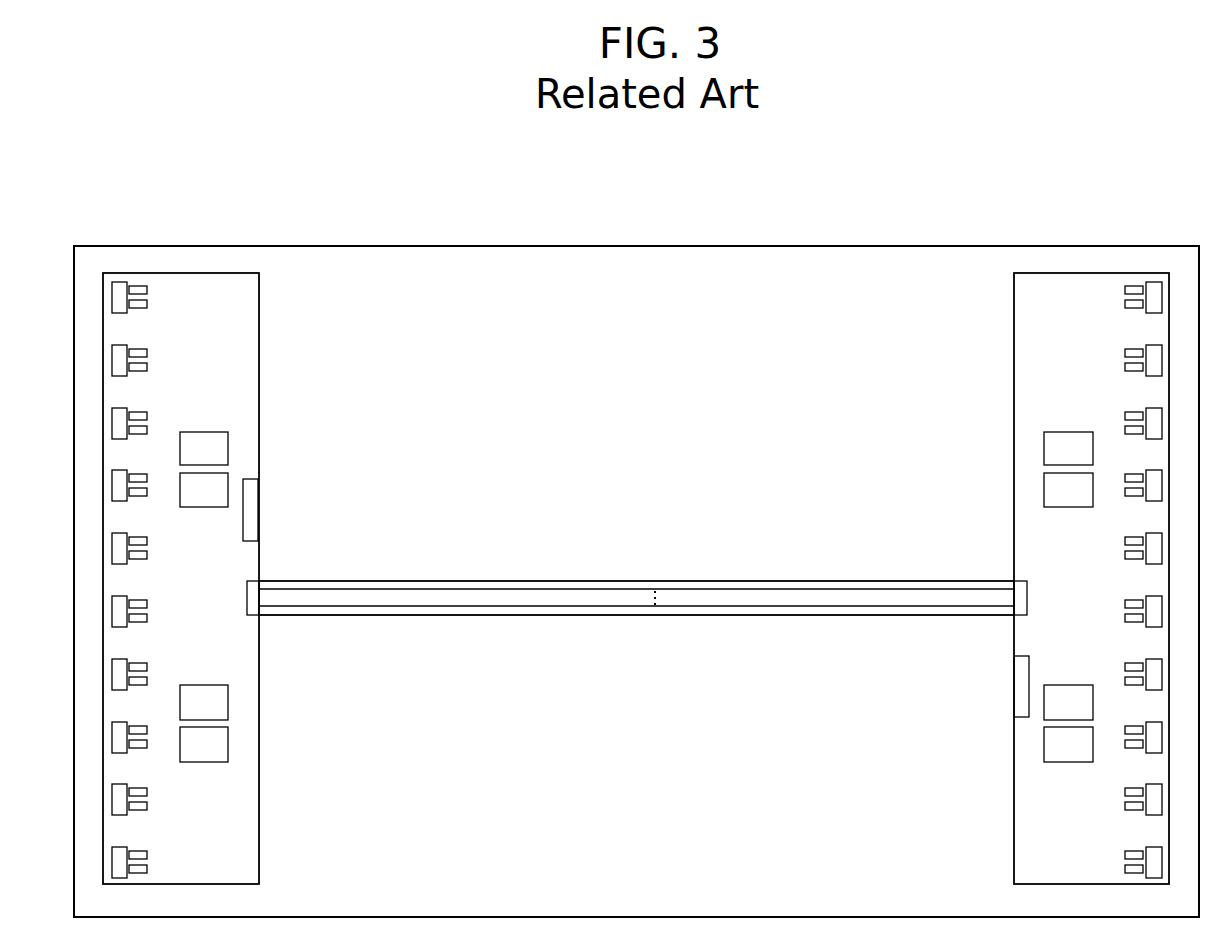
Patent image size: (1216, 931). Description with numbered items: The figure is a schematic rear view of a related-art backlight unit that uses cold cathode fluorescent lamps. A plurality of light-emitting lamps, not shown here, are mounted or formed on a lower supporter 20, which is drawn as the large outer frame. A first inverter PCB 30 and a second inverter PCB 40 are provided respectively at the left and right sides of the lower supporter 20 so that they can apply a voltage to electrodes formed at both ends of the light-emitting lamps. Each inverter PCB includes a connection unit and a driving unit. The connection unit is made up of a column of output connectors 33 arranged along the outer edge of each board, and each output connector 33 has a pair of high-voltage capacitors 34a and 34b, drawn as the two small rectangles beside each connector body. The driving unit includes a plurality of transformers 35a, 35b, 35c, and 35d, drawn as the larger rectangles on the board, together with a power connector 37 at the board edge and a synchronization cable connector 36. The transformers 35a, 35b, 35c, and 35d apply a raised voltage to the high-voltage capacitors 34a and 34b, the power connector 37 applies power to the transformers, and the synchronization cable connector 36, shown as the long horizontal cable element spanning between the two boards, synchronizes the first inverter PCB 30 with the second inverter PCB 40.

The lower supporter 20 is at (657, 246).
The first inverter PCB 30 is at (248, 343).
The output connector 33 is at (118, 360).
The high-voltage capacitor 34a is at (147, 367).
The high-voltage capacitor 34b is at (147, 353).
The transformer 35a is at (216, 747).
The transformer 35b is at (218, 703).
The transformer 35c is at (217, 491).
The transformer 35d is at (223, 450).
The synchronization cable connector 36 is at (253, 600).
The power connector 37 is at (253, 527).
The second inverter PCB 40 is at (1023, 343).